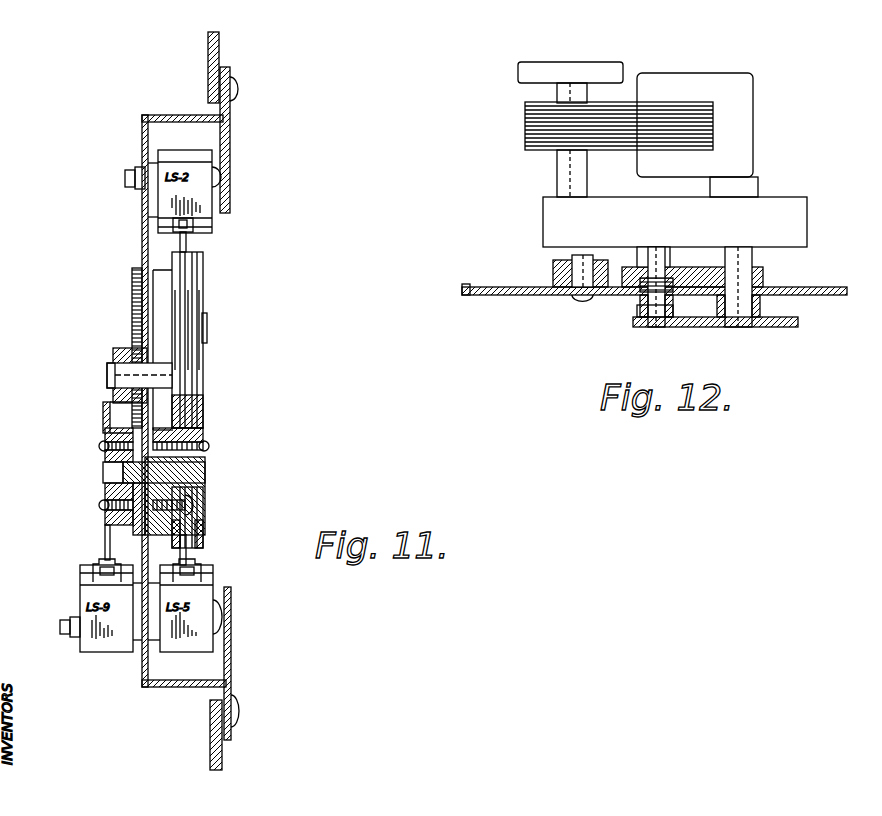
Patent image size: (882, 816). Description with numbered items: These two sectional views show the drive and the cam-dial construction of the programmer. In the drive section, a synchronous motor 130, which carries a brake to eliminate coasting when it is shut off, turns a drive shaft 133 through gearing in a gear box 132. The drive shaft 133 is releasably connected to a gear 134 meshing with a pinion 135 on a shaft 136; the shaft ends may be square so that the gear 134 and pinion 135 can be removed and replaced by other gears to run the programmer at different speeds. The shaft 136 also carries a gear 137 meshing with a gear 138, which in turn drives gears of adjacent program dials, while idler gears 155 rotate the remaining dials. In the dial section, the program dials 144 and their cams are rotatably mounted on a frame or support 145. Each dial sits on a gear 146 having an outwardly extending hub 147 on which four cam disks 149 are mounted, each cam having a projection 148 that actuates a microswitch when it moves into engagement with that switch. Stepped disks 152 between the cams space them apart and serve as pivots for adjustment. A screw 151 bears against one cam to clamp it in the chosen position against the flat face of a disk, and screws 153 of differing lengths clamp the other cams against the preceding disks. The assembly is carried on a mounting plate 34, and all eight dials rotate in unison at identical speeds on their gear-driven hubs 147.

In FIG. 11, the mounting plate 34 is at (230, 58).
In FIG. 11, the frame or support 145 is at (143, 135).
In FIG. 11, the cam projection 148 is at (200, 242).
In FIG. 11, the gear 146 is at (132, 280).
In FIG. 11, the program dial 144 is at (203, 270).
In FIG. 11, the stepped disk 152 is at (180, 300).
In FIG. 11, the hub 147 is at (205, 330).
In FIG. 11, the idler gear 155 is at (133, 347).
In FIG. 11, the screw 153 is at (207, 438).
In FIG. 11, the screw 151 is at (205, 505).
In FIG. 11, the cam disk 149 is at (105, 555).
In FIG. 12, the synchronous motor 130 is at (658, 50).
In FIG. 12, the gear box 132 is at (777, 198).
In FIG. 12, the gear 137 is at (673, 280).
In FIG. 12, the gear 138 is at (523, 283).
In FIG. 12, the drive shaft 133 is at (752, 260).
In FIG. 12, the shaft 136 is at (648, 302).
In FIG. 12, the pinion 135 is at (653, 323).
In FIG. 12, the gear 134 is at (777, 325).